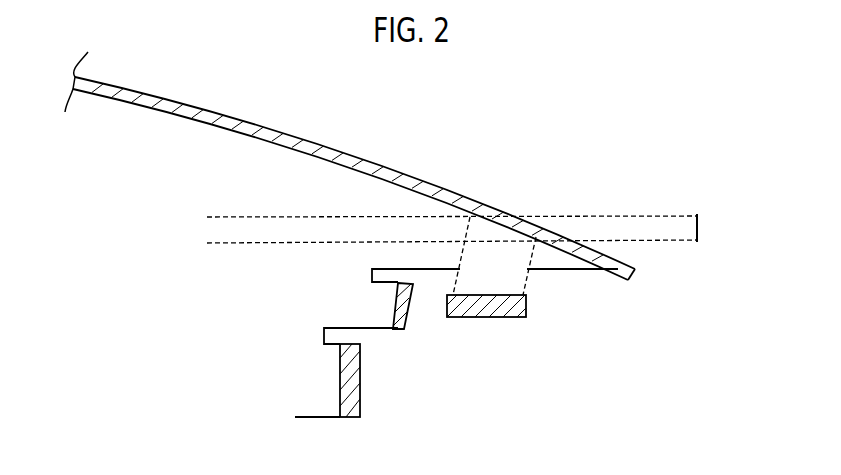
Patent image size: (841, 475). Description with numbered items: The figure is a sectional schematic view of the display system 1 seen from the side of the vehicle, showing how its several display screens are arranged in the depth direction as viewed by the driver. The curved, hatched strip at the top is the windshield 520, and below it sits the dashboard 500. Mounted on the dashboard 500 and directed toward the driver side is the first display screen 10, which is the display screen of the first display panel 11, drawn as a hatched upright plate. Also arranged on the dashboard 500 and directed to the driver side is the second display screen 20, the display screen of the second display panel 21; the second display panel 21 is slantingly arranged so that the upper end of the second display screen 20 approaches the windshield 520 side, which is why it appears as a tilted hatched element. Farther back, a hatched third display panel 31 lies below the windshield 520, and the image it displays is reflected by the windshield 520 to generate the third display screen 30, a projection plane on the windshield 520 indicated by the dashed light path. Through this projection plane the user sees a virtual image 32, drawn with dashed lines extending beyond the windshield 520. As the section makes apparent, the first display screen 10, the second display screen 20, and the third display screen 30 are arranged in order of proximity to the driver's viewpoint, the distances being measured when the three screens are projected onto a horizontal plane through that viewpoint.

The display system 1 is at (460, 400).
The first display screen 10 is at (342, 377).
The first display panel 11 is at (362, 390).
The second display screen 20 is at (397, 305).
The second display panel 21 is at (405, 317).
The third display screen 30 is at (512, 218).
The third display panel 31 is at (512, 317).
The virtual image 32 is at (700, 228).
The dashboard 500 is at (510, 378).
The windshield 520 is at (328, 147).